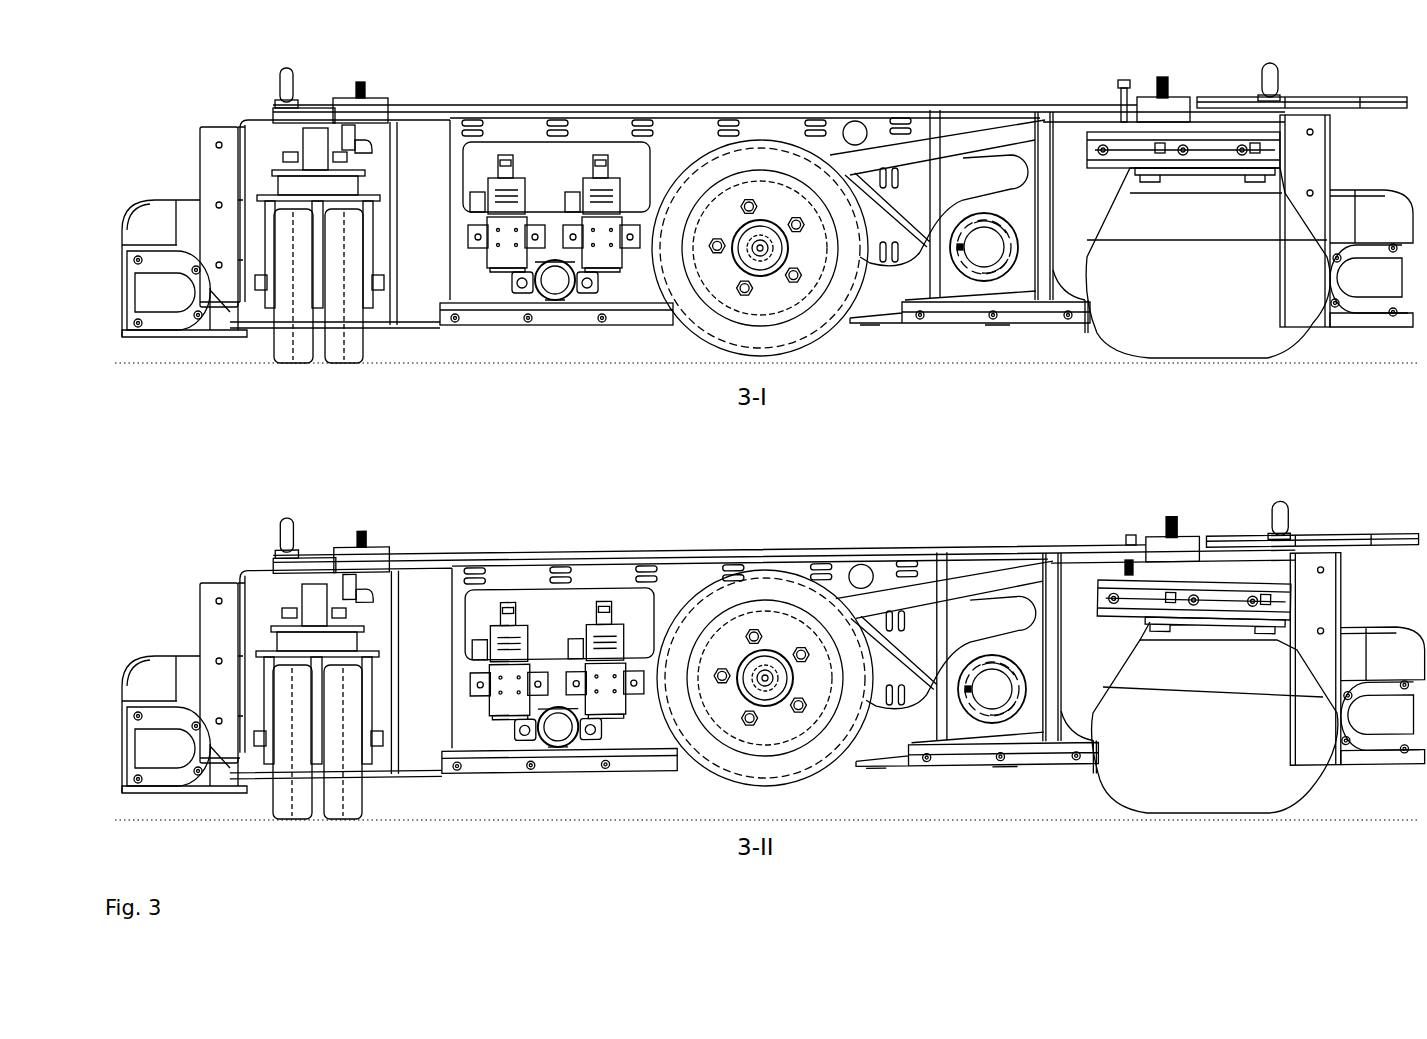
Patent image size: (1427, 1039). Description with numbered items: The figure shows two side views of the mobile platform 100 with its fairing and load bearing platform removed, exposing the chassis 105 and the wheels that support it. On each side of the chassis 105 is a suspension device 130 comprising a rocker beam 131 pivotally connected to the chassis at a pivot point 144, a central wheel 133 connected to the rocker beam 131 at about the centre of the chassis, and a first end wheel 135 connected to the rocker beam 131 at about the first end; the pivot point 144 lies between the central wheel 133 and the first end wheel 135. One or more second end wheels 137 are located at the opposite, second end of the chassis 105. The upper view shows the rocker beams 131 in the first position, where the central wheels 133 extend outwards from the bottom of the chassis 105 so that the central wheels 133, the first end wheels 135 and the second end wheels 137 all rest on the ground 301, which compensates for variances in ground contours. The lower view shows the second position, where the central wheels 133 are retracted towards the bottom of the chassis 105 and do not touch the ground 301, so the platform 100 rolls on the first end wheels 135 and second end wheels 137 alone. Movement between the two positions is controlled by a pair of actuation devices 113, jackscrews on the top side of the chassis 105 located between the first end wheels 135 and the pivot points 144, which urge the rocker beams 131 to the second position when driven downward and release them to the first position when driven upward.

The mobile platform 100 is at (216, 82).
The chassis 105 is at (712, 95).
The actuation devices 113 is at (1110, 80).
The suspension devices 130 is at (1285, 151).
The rocker beam 131 is at (1102, 204).
The central wheel 133 is at (777, 169).
The first end wheel 135 is at (1215, 316).
The second end wheels 137 is at (348, 322).
The pivot point 144 is at (994, 261).
The ground 301 is at (222, 365).